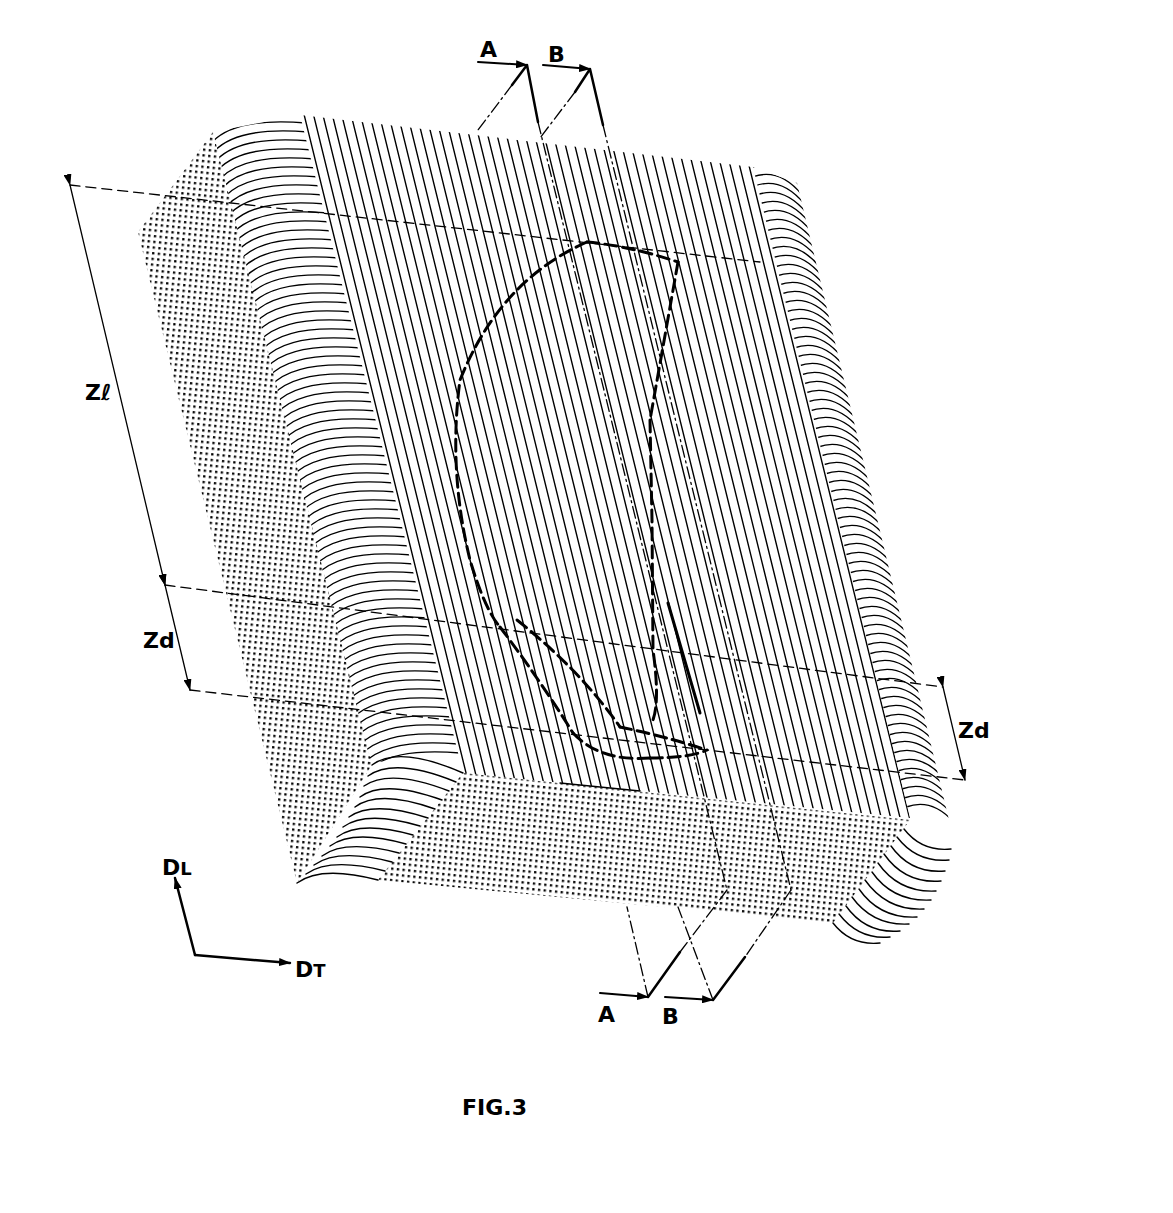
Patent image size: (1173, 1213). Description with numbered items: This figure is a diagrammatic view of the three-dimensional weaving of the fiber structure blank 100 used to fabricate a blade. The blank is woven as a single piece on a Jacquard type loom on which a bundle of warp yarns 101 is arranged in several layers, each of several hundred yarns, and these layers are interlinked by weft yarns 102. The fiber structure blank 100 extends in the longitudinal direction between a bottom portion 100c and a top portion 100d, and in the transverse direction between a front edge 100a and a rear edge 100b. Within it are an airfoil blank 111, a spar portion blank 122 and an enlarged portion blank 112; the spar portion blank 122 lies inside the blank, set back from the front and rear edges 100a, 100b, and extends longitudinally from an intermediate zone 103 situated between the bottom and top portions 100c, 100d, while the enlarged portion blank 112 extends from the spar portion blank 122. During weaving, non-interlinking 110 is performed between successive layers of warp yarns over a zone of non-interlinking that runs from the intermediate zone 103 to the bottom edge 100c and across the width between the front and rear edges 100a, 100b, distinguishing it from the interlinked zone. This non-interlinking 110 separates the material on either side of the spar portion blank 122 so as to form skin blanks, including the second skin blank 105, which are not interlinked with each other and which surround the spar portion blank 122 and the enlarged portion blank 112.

The fiber structure blank 100 is at (797, 70).
The front edge 100a is at (458, 374).
The rear edge 100b is at (652, 497).
The bottom portion 100c is at (600, 778).
The top portion 100d is at (650, 235).
The warp yarns 101 is at (793, 905).
The weft yarns 102 is at (900, 600).
The intermediate zone 103 is at (647, 653).
The second skin blank 105 is at (582, 742).
The non-interlinking 110 is at (555, 712).
The airfoil blank 111 is at (652, 422).
The enlarged portion blank 112 is at (640, 722).
The spar portion blank 122 is at (700, 700).